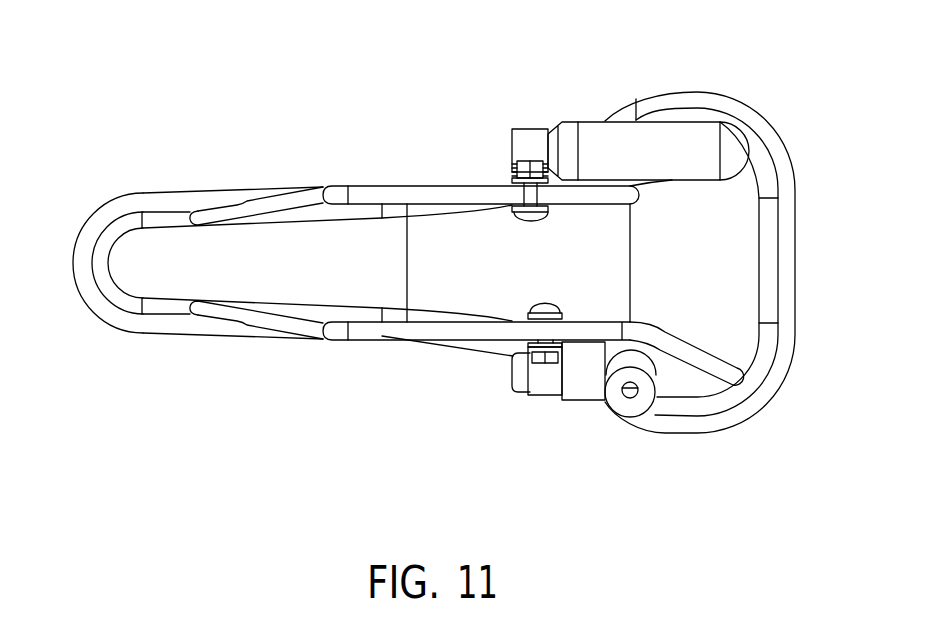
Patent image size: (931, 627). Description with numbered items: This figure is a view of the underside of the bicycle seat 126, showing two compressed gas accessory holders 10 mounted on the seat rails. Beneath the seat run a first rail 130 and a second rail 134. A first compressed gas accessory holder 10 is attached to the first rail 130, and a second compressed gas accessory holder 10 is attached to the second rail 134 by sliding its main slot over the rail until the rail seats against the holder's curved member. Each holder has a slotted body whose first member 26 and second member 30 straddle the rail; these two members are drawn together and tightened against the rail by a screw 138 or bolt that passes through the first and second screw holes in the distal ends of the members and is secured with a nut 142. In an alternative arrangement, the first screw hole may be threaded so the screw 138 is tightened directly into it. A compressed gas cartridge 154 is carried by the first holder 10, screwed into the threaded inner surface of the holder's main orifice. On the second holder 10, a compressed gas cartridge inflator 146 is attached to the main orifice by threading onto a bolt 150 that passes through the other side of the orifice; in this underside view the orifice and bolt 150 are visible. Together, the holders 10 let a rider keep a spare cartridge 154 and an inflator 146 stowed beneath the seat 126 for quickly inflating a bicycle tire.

The compressed gas accessory holder 10 is at (527, 138).
The first member 26 is at (548, 205).
The second member 30 is at (556, 184).
The bicycle seat 126 is at (208, 323).
The first rail 130 is at (367, 192).
The second rail 134 is at (364, 332).
The screw 138 is at (517, 180).
The nut 142 is at (535, 168).
The compressed gas cartridge inflator 146 is at (620, 403).
The bolt 150 is at (518, 393).
The compressed gas cartridge 154 is at (657, 142).